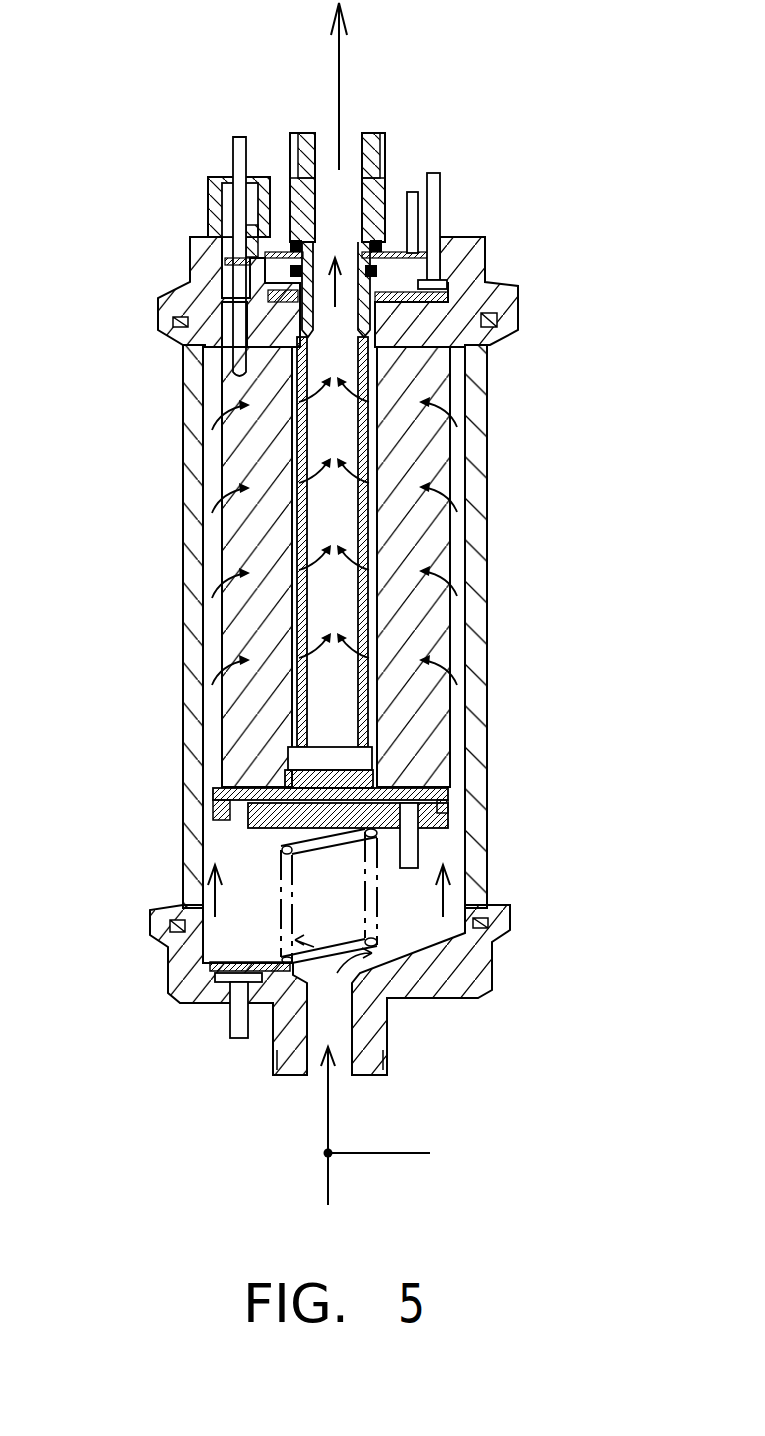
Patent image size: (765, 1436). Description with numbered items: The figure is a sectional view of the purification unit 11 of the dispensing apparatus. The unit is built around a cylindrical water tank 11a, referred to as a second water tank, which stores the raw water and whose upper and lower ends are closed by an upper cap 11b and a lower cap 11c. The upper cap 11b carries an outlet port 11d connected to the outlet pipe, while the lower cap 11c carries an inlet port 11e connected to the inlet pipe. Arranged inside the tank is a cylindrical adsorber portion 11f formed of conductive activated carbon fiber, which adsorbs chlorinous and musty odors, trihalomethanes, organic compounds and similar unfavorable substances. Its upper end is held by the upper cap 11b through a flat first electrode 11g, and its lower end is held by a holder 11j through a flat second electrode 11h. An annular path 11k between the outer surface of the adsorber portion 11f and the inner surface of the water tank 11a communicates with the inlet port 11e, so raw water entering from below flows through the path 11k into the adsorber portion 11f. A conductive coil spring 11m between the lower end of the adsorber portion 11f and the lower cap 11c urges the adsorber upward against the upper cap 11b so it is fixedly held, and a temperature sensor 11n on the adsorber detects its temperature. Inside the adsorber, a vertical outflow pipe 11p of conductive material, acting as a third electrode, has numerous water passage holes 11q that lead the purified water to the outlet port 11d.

The purification unit 11 is at (535, 453).
The water tank 11a is at (183, 779).
The upper cap 11b is at (190, 243).
The lower cap 11c is at (172, 1000).
The outlet port 11d is at (348, 134).
The inlet port 11e is at (338, 1040).
The adsorber portion 11f is at (235, 532).
The first electrode 11g is at (442, 263).
The second electrode 11h is at (450, 790).
The holder 11j is at (443, 806).
The annular path 11k is at (215, 458).
The conductive coil spring 11m is at (403, 957).
The temperature sensor 11n is at (208, 180).
The outflow pipe 11p is at (300, 618).
The water passage holes 11q is at (365, 648).